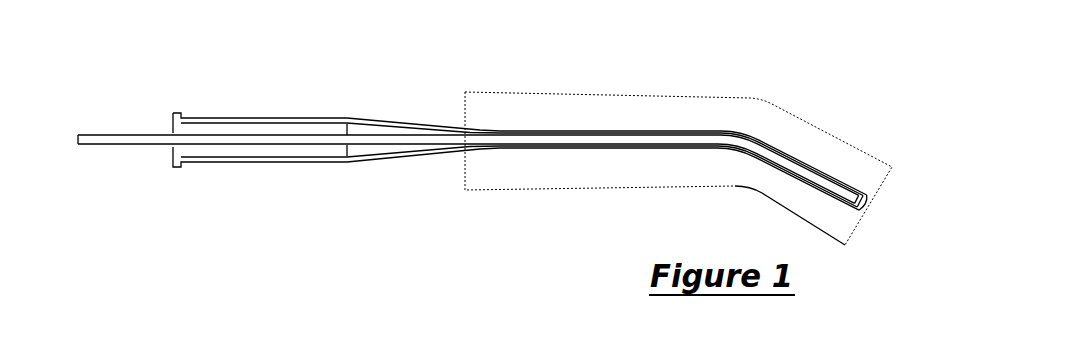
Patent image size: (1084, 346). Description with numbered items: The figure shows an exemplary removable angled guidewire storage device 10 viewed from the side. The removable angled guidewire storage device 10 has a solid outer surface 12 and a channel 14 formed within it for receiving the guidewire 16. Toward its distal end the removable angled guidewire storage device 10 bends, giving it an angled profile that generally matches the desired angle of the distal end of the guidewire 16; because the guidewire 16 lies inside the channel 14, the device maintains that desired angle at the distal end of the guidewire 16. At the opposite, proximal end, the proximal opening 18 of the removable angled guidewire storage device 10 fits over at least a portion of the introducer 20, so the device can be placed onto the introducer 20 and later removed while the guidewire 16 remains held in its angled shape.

The removable angled guidewire storage device 10 is at (732, 66).
The solid outer surface 12 is at (580, 97).
The channel 14 is at (867, 200).
The guidewire 16 is at (619, 146).
The proximal opening 18 is at (463, 152).
The introducer 20 is at (257, 150).